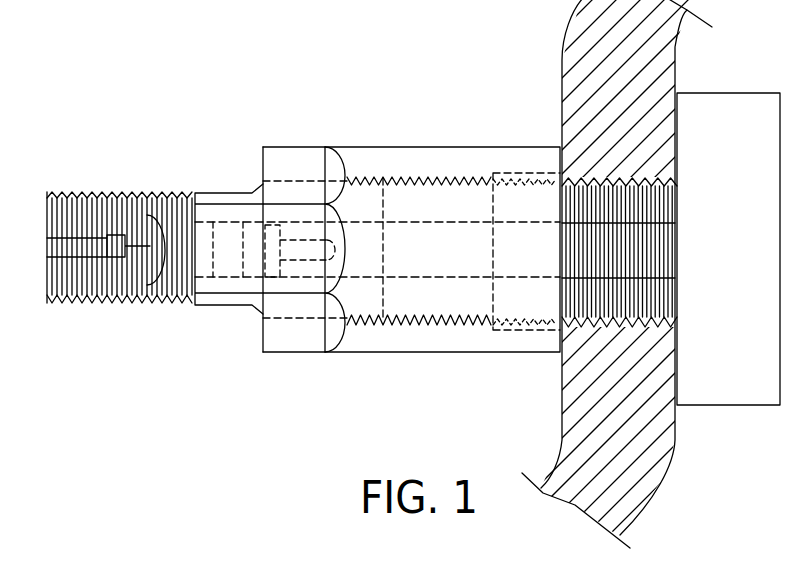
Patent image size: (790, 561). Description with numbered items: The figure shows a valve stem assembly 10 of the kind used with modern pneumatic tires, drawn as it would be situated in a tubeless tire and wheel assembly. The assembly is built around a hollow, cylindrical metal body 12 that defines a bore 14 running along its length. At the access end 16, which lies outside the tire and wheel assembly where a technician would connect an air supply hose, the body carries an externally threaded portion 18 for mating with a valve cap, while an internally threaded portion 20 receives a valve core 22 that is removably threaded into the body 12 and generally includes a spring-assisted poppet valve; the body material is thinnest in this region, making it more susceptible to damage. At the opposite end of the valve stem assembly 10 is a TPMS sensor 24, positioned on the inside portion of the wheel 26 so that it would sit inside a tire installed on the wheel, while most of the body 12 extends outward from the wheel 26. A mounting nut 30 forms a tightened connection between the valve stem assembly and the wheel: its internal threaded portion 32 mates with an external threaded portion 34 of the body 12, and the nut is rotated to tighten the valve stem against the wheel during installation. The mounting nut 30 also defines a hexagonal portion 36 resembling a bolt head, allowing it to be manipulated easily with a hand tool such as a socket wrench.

The valve stem assembly 10 is at (214, 368).
The body 12 is at (222, 205).
The bore 14 is at (432, 255).
The access end 16 is at (38, 306).
The externally threaded portion 18 is at (99, 302).
The internally threaded portion 20 is at (40, 205).
The valve core 22 is at (92, 235).
The TPMS sensor 24 is at (718, 260).
The wheel 26 is at (560, 407).
The mounting nut 30 is at (437, 343).
The internal threaded portion 32 is at (377, 173).
The external threaded portion 34 is at (604, 332).
The hexagonal portion 36 is at (298, 352).